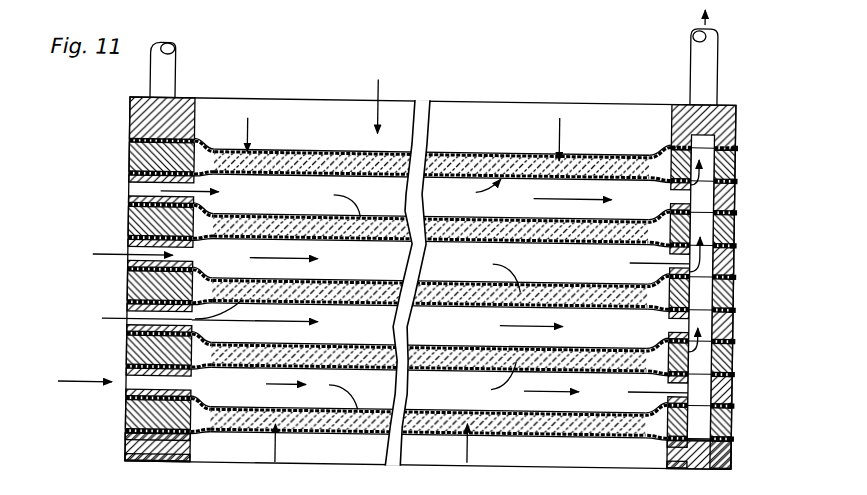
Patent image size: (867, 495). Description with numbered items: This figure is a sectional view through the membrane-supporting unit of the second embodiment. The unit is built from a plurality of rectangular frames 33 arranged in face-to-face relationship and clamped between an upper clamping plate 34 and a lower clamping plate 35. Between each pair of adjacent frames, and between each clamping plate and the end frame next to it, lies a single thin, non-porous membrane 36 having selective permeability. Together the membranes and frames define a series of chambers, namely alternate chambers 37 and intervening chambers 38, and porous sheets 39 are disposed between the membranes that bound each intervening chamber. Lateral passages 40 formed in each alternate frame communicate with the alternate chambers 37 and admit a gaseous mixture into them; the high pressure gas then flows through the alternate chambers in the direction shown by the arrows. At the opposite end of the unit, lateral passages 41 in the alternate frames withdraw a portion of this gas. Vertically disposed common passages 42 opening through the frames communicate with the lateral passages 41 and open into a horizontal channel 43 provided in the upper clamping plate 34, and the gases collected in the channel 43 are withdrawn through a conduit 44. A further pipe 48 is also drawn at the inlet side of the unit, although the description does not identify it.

The rectangular frames 33 is at (736, 228).
The upper clamping plate 34 is at (736, 116).
The lower clamping plate 35 is at (736, 453).
The membrane 36 is at (736, 338).
The alternate chambers 37 is at (290, 204).
The intervening chambers 38 is at (197, 146).
The porous sheets 39 is at (347, 148).
The lateral passages 40 is at (130, 192).
The lateral passages 41 is at (690, 190).
The common passages 42 is at (700, 420).
The horizontal channel 43 is at (707, 134).
The conduit 44 is at (717, 76).
The inlet pipe 48 is at (175, 70).